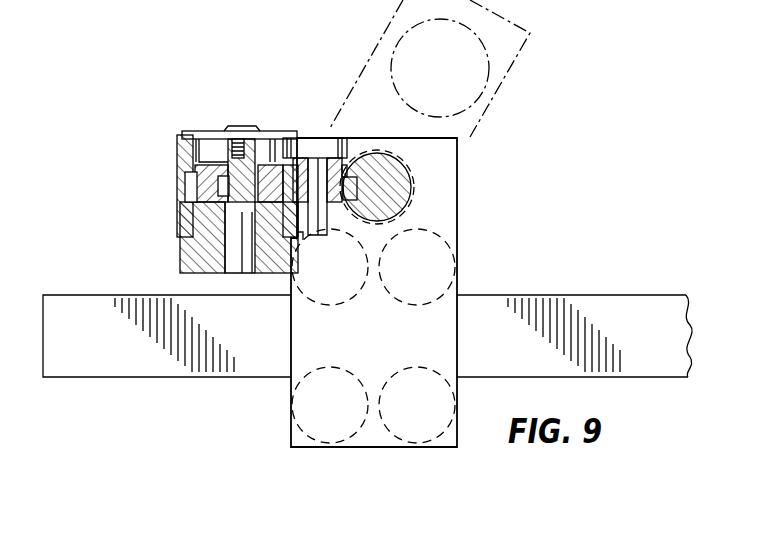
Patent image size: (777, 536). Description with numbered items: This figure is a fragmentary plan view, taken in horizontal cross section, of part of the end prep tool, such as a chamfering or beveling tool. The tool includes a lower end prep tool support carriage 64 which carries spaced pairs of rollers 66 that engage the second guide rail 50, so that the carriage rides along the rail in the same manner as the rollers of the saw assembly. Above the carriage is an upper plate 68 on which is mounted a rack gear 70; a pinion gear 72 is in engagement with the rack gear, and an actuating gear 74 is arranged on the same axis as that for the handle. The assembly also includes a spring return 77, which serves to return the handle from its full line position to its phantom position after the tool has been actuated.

The second guide rail 50 is at (586, 302).
The lower end prep tool support carriage 64 is at (450, 318).
The rollers 66 is at (427, 368).
The upper plate 68 is at (497, 92).
The rack gear 70 is at (366, 182).
The pinion gear 72 is at (303, 160).
The actuating gear 74 is at (180, 186).
The spring return 77 is at (269, 143).